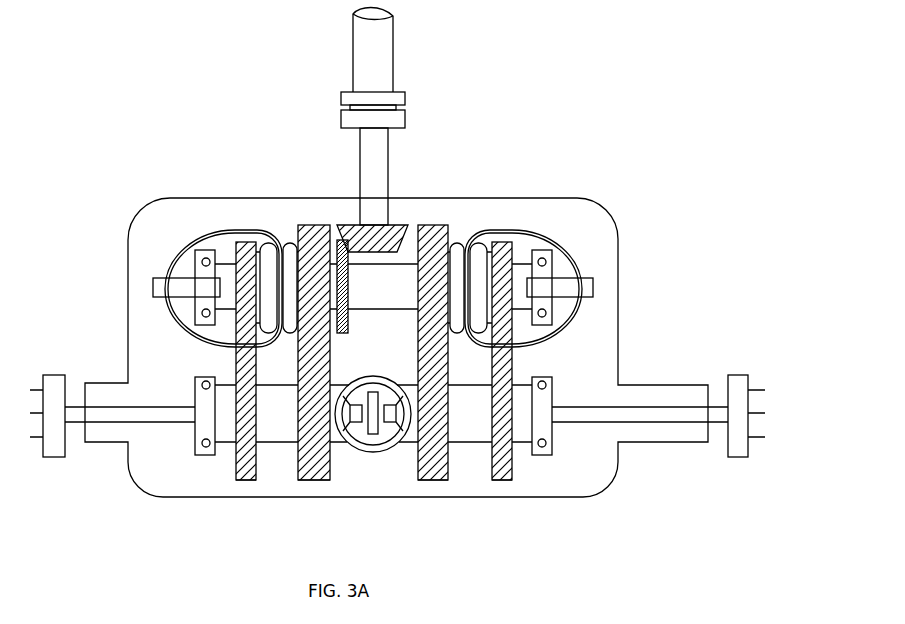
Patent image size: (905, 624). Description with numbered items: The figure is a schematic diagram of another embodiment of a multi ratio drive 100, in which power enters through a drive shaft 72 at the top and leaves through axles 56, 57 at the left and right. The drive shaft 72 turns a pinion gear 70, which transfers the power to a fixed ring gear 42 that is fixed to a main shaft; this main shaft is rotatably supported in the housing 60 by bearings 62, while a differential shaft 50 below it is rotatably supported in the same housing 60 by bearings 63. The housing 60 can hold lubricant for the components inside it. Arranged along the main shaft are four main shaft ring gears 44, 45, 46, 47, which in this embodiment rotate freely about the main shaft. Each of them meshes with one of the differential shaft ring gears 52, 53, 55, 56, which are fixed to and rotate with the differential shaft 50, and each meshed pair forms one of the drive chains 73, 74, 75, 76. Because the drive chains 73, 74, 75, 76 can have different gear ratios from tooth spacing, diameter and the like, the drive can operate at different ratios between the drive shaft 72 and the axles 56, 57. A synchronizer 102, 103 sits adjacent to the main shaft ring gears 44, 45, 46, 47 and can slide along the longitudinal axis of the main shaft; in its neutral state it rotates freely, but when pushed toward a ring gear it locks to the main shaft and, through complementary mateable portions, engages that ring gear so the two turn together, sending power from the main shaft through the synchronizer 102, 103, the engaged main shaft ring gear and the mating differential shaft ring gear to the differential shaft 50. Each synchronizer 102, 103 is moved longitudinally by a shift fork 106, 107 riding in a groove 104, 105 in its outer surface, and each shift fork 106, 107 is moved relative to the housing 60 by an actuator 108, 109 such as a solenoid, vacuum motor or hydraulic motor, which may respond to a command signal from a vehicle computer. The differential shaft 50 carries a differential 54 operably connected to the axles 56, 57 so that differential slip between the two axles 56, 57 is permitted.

The multi ratio drive 100 is at (246, 118).
The drive shaft 72 is at (388, 62).
The pinion gear 70 is at (397, 242).
The fixed ring gear 42 is at (348, 318).
The main shaft ring gear 44 is at (218, 358).
The main shaft ring gear 45 is at (320, 356).
The main shaft ring gear 46 is at (442, 359).
The main shaft ring gear 47 is at (503, 247).
The groove 104 is at (270, 246).
The synchronizer 102 is at (289, 246).
The synchronizer 103 is at (458, 243).
The groove 105 is at (477, 246).
The shift fork 106 is at (175, 322).
The shift fork 107 is at (582, 264).
The actuator 108 is at (157, 285).
The actuator 109 is at (585, 288).
The bearings 62 is at (200, 318).
The housing 60 is at (618, 342).
The differential shaft ring gear 52 is at (250, 482).
The differential shaft ring gear 53 is at (312, 482).
The differential 54 is at (368, 440).
The differential shaft ring gear 55 is at (438, 482).
The differential shaft ring gear 56 is at (168, 418).
The axle 57 is at (722, 418).
The differential shaft 50 is at (520, 440).
The bearings 63 is at (205, 455).
The drive chain 73 is at (242, 484).
The drive chain 74 is at (307, 484).
The drive chain 75 is at (432, 484).
The drive chain 76 is at (496, 484).